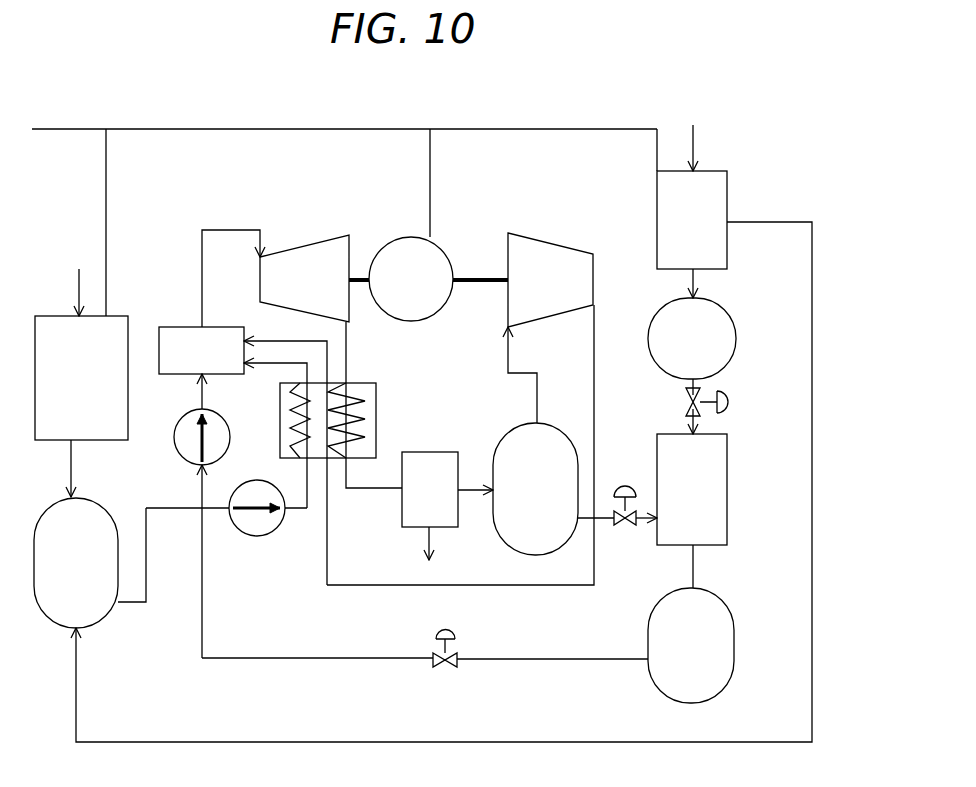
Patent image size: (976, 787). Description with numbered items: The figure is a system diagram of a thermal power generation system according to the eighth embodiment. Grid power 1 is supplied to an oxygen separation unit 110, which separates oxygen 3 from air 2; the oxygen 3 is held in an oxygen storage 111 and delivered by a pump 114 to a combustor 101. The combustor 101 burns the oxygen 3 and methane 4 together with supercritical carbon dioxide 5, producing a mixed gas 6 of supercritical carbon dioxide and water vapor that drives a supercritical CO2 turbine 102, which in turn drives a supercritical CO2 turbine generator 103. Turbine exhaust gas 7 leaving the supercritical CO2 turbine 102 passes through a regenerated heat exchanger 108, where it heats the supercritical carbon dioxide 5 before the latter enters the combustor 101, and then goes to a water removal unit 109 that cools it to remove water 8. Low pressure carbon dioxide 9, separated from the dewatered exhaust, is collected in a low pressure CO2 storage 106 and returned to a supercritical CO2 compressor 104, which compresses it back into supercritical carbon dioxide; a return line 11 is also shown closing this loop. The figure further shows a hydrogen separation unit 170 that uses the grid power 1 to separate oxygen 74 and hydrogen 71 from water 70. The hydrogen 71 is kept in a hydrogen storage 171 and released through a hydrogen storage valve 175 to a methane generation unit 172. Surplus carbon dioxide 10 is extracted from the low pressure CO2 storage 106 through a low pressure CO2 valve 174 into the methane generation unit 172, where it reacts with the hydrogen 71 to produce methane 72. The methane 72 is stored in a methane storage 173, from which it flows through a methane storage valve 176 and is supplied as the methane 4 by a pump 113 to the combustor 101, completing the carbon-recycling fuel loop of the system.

The grid power 1 is at (175, 129).
The air 2 is at (78, 290).
The oxygen 3 is at (70, 468).
The methane 4 is at (200, 494).
The supercritical carbon dioxide 5 is at (267, 340).
The mixed gas 6 is at (216, 230).
The turbine exhaust gas 7 is at (349, 368).
The water 8 is at (428, 546).
The low pressure carbon dioxide 9 is at (504, 340).
The surplus carbon dioxide 10 is at (599, 518).
The return line 11 is at (548, 585).
The water 70 is at (694, 147).
The hydrogen 71 is at (695, 291).
The methane 72 is at (693, 571).
The oxygen 74 is at (760, 220).
The combustor 101 is at (179, 327).
The supercritical CO2 turbine 102 is at (310, 256).
The supercritical CO2 turbine generator 103 is at (404, 236).
The supercritical CO2 compressor 104 is at (540, 248).
The low pressure CO2 storage 106 is at (548, 423).
The regenerated heat exchanger 108 is at (377, 408).
The water removal unit 109 is at (432, 452).
The oxygen separation unit 110 is at (95, 440).
The oxygen storage 111 is at (100, 628).
The pump 113 is at (180, 428).
The pump 114 is at (257, 480).
The hydrogen separation unit 170 is at (728, 184).
The hydrogen storage 171 is at (732, 338).
The methane generation unit 172 is at (726, 491).
The methane storage 173 is at (734, 647).
The low pressure CO2 valve 174 is at (625, 485).
The hydrogen storage valve 175 is at (727, 402).
The methane storage valve 176 is at (454, 632).